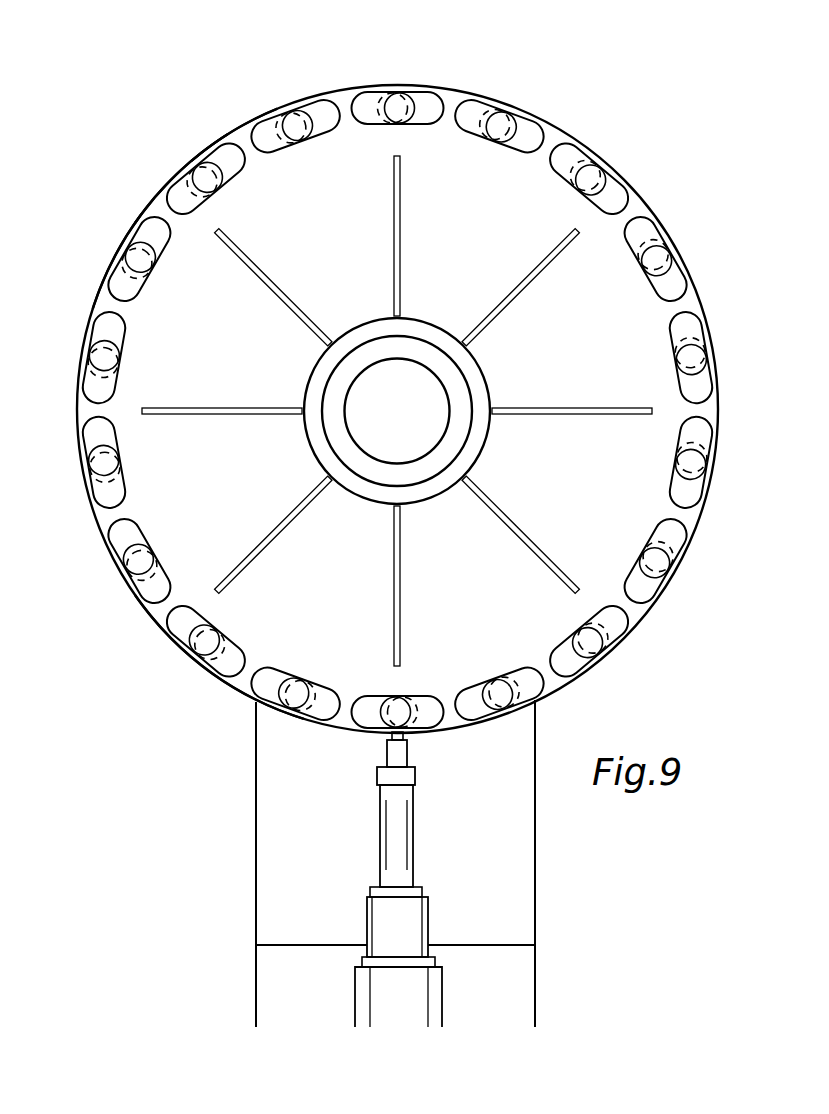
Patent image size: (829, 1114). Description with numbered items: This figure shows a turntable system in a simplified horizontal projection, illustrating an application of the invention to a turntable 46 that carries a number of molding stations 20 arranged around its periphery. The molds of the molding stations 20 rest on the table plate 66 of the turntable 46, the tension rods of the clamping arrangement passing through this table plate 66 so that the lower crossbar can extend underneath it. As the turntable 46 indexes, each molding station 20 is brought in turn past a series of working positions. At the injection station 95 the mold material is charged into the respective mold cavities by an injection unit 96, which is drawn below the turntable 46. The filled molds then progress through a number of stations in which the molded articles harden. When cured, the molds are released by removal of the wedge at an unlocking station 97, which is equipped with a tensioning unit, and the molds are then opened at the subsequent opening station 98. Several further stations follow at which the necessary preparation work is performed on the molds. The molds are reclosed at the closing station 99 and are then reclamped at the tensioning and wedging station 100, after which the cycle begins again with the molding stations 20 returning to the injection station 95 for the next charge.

The molding station 20 is at (535, 115).
The turntable 46 is at (417, 85).
The table plate 66 is at (252, 167).
The injection station 95 is at (418, 740).
The injection unit 96 is at (403, 822).
The unlocking station 97 is at (173, 173).
The opening station 98 is at (112, 260).
The closing station 99 is at (170, 640).
The tensioning and wedging station 100 is at (252, 708).